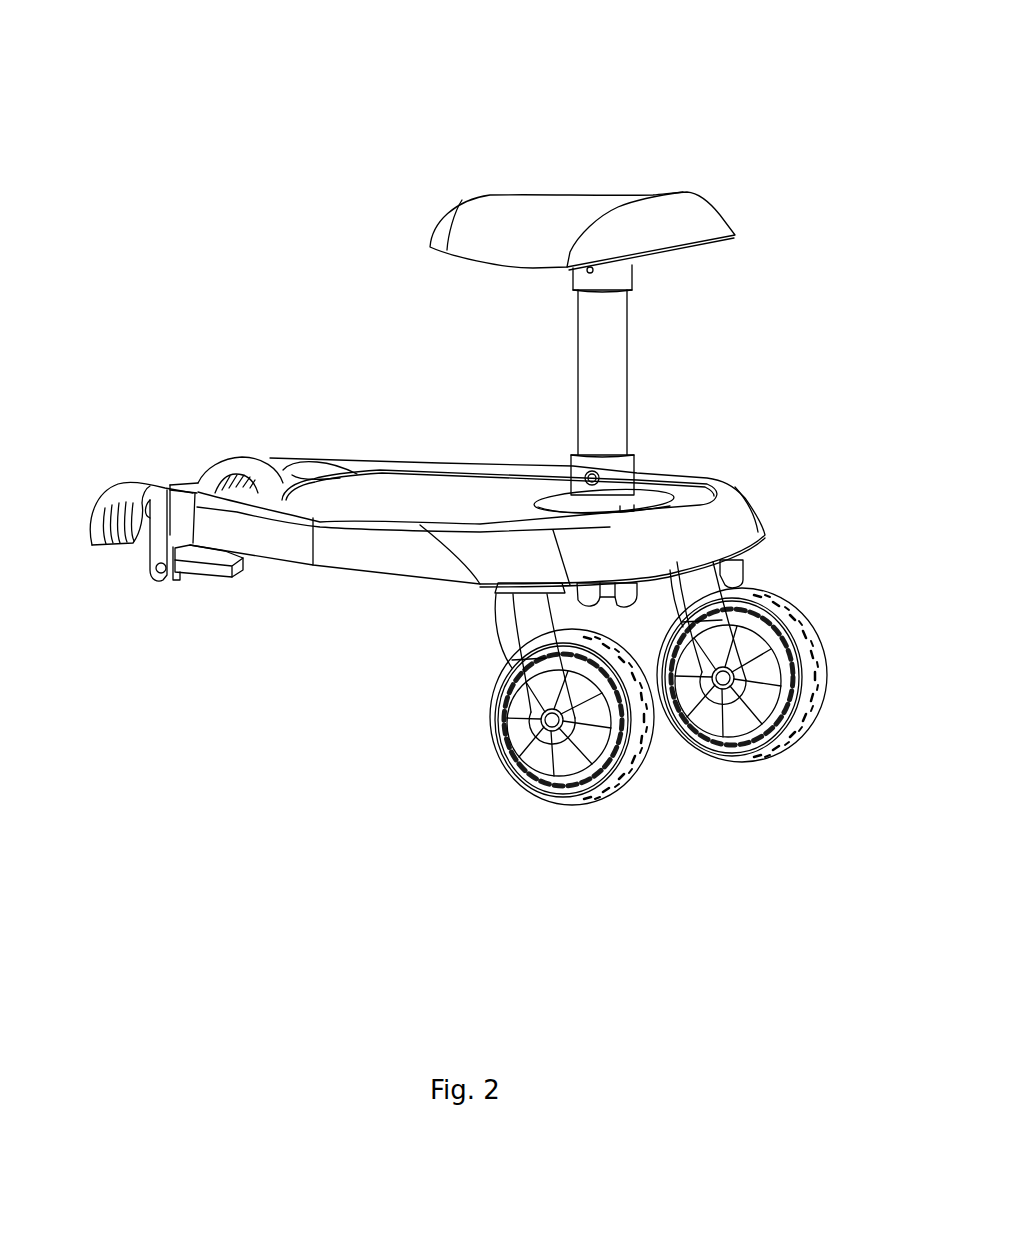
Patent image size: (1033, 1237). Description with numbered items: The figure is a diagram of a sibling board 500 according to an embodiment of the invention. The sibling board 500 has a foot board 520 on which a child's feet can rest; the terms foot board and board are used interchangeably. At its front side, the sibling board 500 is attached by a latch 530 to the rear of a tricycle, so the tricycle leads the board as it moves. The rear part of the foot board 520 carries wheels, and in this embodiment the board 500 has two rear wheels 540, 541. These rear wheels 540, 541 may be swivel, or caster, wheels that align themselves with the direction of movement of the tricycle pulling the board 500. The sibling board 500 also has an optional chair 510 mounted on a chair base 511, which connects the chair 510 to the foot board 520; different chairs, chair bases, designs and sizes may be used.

The sibling board 500 is at (750, 83).
The chair 510 is at (718, 213).
The chair base 511 is at (617, 325).
The foot board 520 is at (737, 518).
The latch 530 is at (95, 545).
The wheel 540 is at (622, 762).
The rear wheel 541 is at (790, 742).